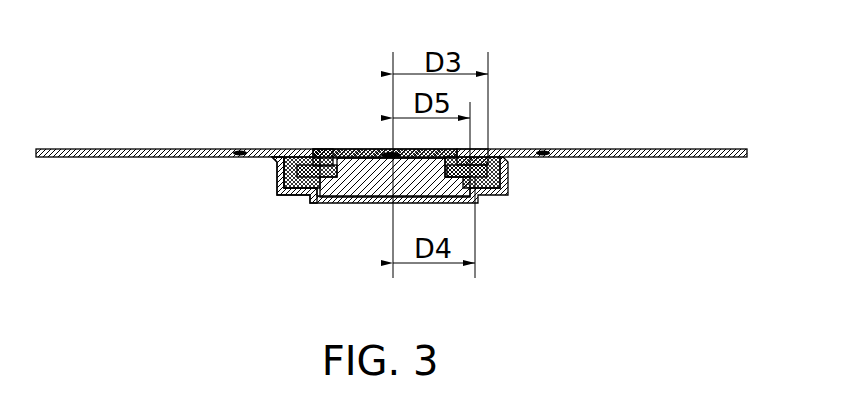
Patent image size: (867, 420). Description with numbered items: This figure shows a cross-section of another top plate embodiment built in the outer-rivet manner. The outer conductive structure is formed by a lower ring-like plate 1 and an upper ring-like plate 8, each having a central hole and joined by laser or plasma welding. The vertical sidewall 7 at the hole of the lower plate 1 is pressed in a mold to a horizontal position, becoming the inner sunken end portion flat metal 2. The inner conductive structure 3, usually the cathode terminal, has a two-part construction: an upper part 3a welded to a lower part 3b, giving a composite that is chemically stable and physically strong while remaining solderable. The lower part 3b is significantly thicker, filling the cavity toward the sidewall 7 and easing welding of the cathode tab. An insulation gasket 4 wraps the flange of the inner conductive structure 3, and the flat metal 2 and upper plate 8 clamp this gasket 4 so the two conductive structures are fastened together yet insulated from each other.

The lower ring-like plate 1 is at (643, 149).
The inner sunken end portion flat metal 2 is at (493, 195).
The inner conductive structure 3 is at (359, 159).
The upper part 3a is at (372, 150).
The lower part 3b is at (362, 183).
The insulation gasket 4 is at (296, 149).
The sidewall 7 is at (278, 195).
The upper ring-like plate 8 is at (505, 149).